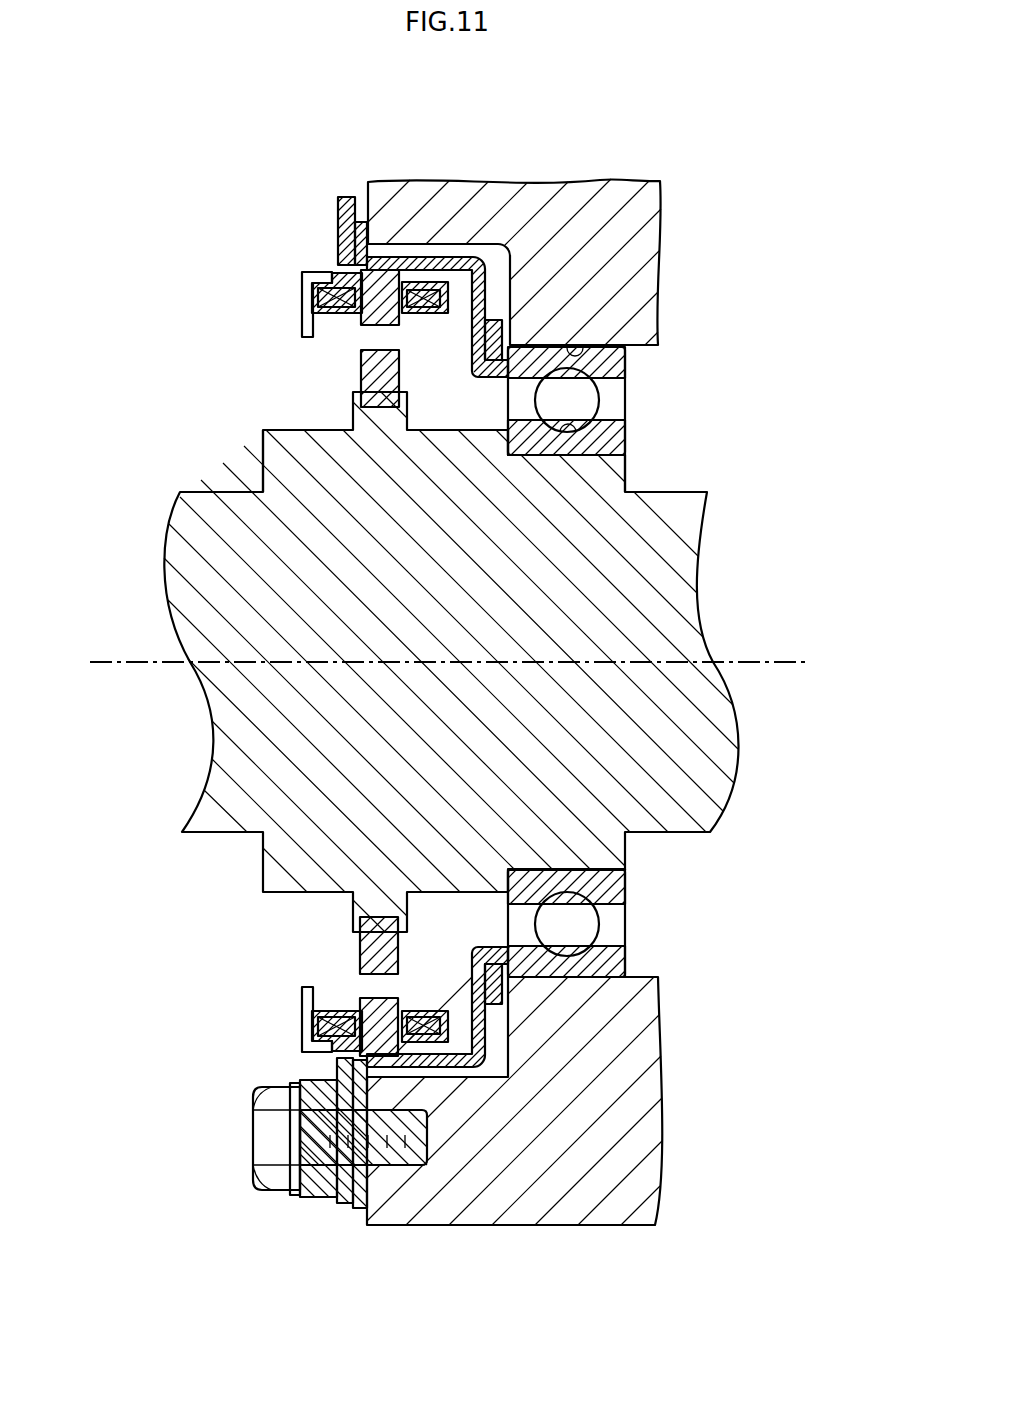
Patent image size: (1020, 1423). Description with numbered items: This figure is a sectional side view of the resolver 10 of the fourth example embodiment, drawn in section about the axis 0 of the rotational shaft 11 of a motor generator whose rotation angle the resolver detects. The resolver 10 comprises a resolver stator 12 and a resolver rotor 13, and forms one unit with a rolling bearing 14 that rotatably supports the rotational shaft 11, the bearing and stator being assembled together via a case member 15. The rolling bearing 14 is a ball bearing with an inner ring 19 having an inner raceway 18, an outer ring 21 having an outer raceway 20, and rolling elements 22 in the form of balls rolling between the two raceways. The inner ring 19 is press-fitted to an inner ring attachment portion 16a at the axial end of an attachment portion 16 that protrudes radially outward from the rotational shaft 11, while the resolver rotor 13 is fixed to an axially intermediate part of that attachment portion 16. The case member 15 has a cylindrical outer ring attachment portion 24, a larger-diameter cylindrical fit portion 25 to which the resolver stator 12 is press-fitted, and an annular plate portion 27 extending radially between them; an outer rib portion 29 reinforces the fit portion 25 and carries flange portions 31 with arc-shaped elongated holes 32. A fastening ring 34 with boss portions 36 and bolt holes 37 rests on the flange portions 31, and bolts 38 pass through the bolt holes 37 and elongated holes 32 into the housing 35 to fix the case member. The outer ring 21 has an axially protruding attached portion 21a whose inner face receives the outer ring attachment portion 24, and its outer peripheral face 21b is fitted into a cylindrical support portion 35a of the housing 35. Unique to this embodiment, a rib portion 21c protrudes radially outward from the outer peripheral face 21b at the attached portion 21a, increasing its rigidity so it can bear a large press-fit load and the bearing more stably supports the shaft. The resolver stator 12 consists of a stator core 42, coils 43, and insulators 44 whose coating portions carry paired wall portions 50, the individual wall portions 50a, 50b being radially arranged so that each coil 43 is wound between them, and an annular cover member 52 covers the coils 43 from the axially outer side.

The rotation axis 0 is at (771, 658).
The resolver 10 is at (224, 330).
The rotational shaft 11 is at (178, 553).
The resolver stator 12 is at (332, 260).
The resolver rotor 13 is at (360, 380).
The rolling bearing 14 is at (624, 437).
The case member 15 is at (455, 254).
The attachment portion 16 is at (262, 458).
The inner ring attachment portion 16a is at (604, 448).
The inner raceway 18 is at (586, 452).
The inner ring 19 is at (528, 450).
The outer raceway 20 is at (590, 395).
The outer ring 21 is at (622, 362).
The attached portion 21a is at (493, 362).
The outer peripheral face 21b is at (622, 347).
The rib portion 21c is at (576, 345).
The rolling elements 22 is at (583, 410).
The outer ring attachment portion 24 is at (483, 376).
The fit portion 25 is at (428, 256).
The annular plate portion 27 is at (493, 285).
The outer rib portion 29 is at (338, 232).
The flange portion 31 is at (358, 1209).
The elongated hole 32 is at (383, 1162).
The fastening ring 34 is at (347, 197).
The housing 35 is at (537, 195).
The cylindrical support portion 35a is at (598, 345).
The boss portion 36 is at (315, 1198).
The bolt hole 37 is at (320, 1122).
The bolt 38 is at (253, 1137).
The stator core 42 is at (372, 268).
The coil 43 is at (318, 297).
The insulator 44 is at (335, 314).
The lower bracket 50 is at (437, 1007).
The wall portion 50a is at (449, 1038).
The wall portion 50b is at (437, 1010).
The cover member 52 is at (300, 1015).